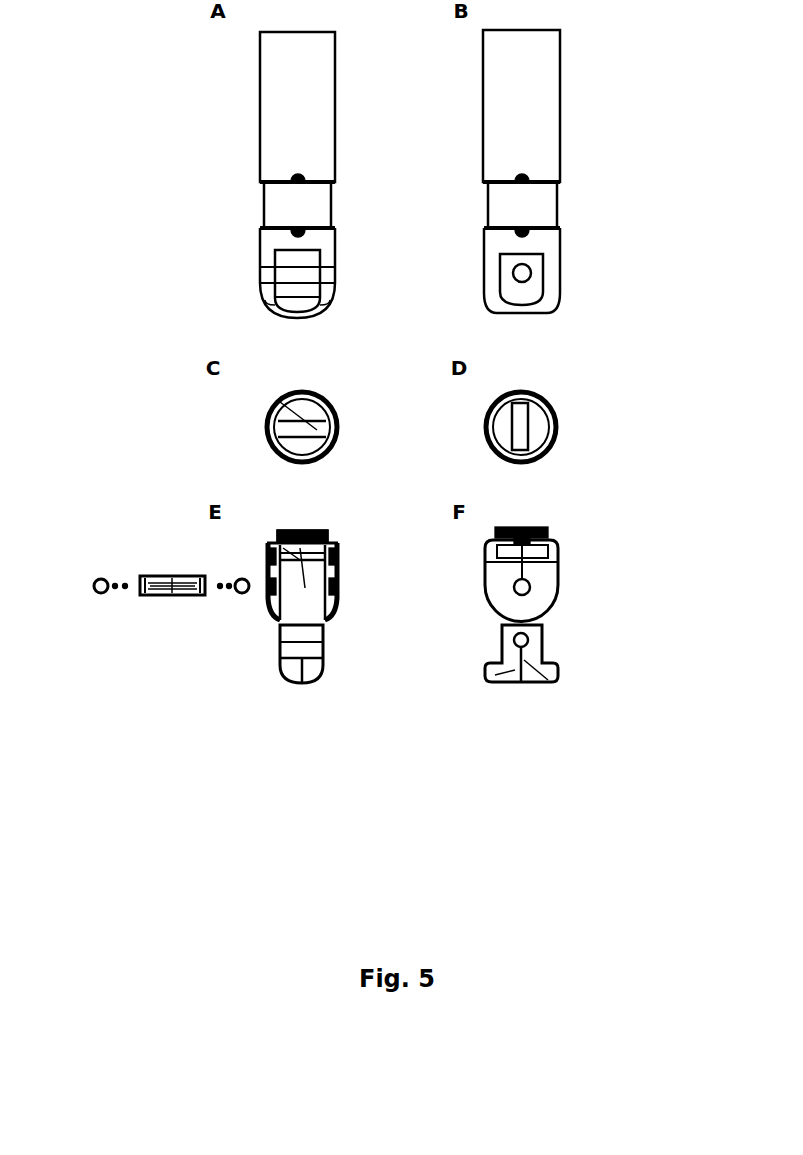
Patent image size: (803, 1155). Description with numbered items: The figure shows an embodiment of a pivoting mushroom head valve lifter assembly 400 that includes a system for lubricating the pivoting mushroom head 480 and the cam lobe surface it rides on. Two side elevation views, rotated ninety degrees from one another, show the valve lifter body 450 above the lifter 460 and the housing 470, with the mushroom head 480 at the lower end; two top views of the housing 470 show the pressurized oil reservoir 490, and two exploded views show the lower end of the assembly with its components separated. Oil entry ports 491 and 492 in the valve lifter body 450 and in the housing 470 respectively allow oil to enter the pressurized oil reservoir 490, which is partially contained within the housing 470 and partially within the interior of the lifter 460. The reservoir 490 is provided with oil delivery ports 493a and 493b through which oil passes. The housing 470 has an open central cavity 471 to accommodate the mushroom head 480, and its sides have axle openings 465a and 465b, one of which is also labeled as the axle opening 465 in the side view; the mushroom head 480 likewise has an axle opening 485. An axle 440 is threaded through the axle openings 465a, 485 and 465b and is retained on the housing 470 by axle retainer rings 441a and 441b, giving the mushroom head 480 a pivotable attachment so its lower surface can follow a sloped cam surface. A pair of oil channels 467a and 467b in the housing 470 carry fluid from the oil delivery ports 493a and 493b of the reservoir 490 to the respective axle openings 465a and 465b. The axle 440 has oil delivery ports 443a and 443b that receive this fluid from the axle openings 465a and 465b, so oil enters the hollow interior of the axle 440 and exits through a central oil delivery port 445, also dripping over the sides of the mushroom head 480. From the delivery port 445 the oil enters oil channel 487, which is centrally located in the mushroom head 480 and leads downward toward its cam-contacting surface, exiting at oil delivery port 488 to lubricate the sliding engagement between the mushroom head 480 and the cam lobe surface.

The pivoting mushroom head valve lifter assembly 400 is at (655, 85).
The valve lifter body 450 is at (273, 140).
The lifter 460 is at (502, 204).
The housing 470 is at (273, 243).
The mushroom head 480 is at (465, 712).
The axle opening 465 is at (267, 277).
The oil entry port 491 is at (303, 172).
The oil entry port 492 is at (290, 225).
The oil delivery port 493a is at (283, 403).
The oil delivery port 493b is at (266, 428).
The pressurized oil reservoir 490 is at (623, 508).
The open central cavity 471 is at (283, 530).
The oil channel 467a is at (340, 561).
The oil channel 467b is at (272, 555).
The axle 440 is at (160, 598).
The oil delivery port 443a is at (200, 572).
The oil delivery port 443b is at (150, 572).
The central oil delivery port 445 is at (175, 598).
The axle retainer ring 441a is at (240, 598).
The axle retainer ring 441b is at (96, 592).
The axle opening 465a is at (337, 588).
The axle opening 465b is at (262, 592).
The axle opening 485 is at (312, 643).
The oil channel 487 is at (548, 680).
The oil delivery port 488 is at (518, 683).